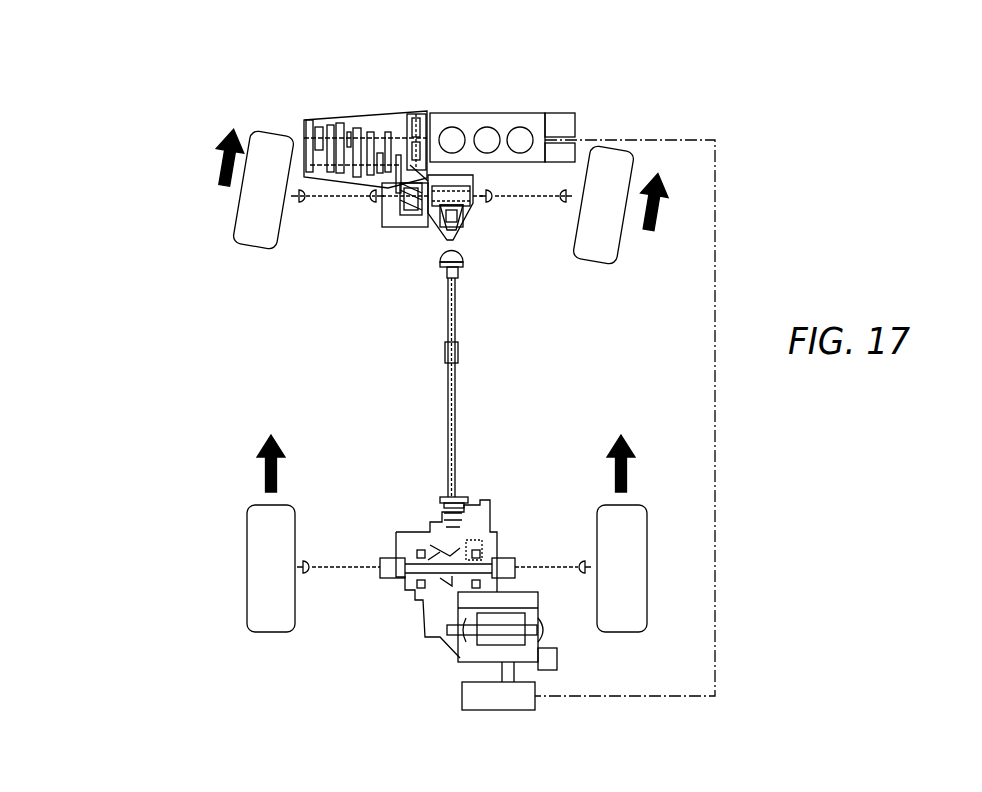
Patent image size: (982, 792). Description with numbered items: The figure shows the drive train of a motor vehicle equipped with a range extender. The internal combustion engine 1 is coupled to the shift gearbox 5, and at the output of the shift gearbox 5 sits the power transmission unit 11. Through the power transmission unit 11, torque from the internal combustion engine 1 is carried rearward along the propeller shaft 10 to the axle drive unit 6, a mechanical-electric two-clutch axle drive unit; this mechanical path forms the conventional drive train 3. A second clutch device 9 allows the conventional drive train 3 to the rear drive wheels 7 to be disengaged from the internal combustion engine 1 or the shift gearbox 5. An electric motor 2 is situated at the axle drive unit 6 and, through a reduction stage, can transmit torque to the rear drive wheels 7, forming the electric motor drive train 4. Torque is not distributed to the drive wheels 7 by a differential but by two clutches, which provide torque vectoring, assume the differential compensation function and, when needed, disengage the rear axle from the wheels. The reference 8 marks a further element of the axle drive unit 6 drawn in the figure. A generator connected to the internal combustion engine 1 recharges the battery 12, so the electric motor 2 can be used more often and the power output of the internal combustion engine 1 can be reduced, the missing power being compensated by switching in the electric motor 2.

The internal combustion engine 1 is at (497, 114).
The electric motor 2 is at (520, 602).
The conventional drive train 3 is at (436, 380).
The electric motor drive train 4 is at (440, 571).
The shift gearbox 5 is at (305, 122).
The axle drive unit 6 is at (450, 556).
The rear drive wheels 7 is at (631, 533).
The clutch 8 is at (476, 542).
The second clutch device 9 is at (437, 220).
The propeller shaft 10 is at (453, 318).
The power transmission unit 11 is at (470, 227).
The battery 12 is at (468, 702).